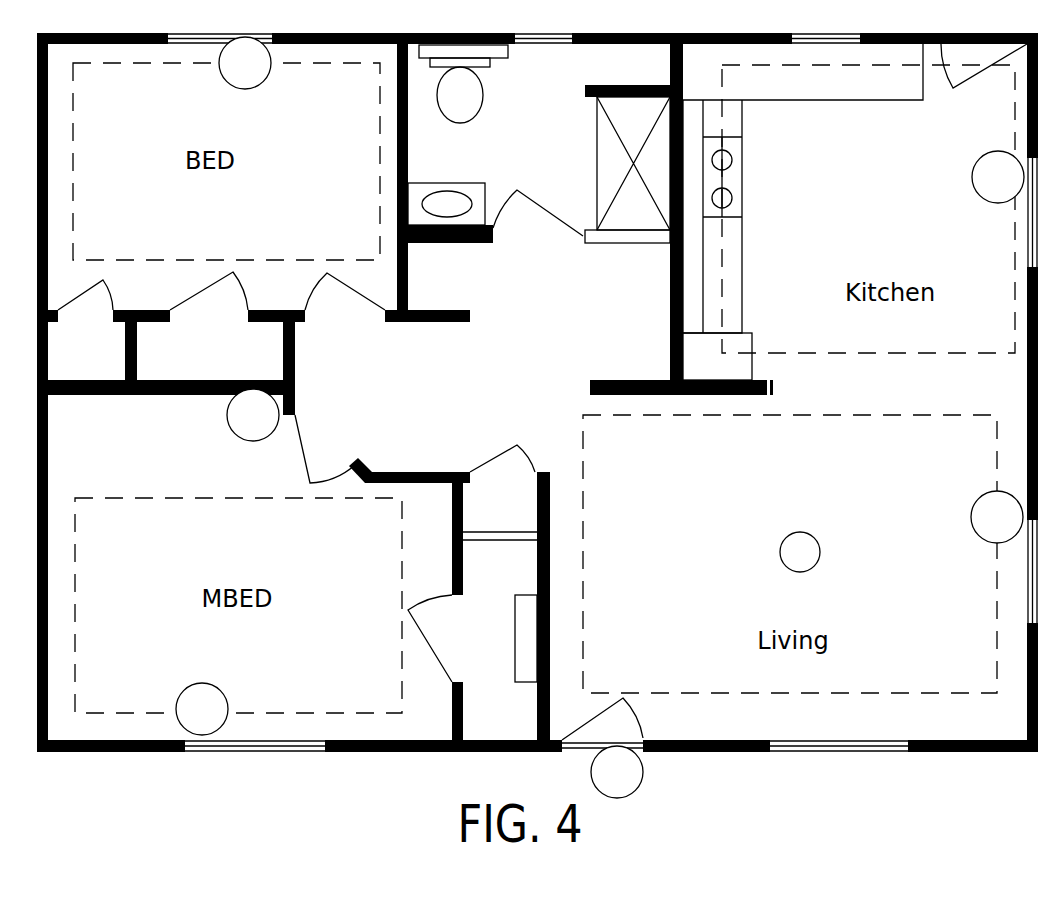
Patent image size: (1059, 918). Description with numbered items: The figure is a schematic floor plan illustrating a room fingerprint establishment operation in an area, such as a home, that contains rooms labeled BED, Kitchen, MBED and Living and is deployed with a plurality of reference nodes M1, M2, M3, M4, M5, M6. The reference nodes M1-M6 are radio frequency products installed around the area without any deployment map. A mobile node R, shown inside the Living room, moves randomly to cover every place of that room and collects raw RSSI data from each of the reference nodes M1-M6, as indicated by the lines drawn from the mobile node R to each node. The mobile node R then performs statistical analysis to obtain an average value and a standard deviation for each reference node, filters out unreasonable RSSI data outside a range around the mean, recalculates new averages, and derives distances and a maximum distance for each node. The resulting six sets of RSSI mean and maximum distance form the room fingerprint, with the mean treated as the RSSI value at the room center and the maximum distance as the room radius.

The mobile node R is at (800, 552).
The reference node M1 is at (786, 568).
The reference node M2 is at (821, 549).
The reference node M3 is at (810, 534).
The reference node M4 is at (784, 538).
The reference node M5 is at (780, 557).
The reference node M6 is at (780, 547).